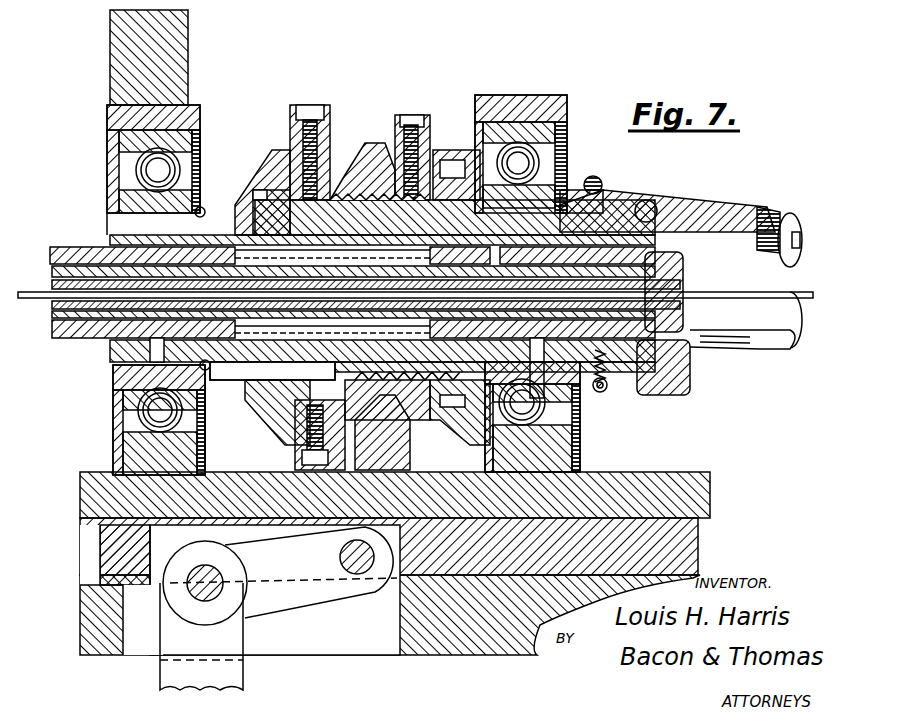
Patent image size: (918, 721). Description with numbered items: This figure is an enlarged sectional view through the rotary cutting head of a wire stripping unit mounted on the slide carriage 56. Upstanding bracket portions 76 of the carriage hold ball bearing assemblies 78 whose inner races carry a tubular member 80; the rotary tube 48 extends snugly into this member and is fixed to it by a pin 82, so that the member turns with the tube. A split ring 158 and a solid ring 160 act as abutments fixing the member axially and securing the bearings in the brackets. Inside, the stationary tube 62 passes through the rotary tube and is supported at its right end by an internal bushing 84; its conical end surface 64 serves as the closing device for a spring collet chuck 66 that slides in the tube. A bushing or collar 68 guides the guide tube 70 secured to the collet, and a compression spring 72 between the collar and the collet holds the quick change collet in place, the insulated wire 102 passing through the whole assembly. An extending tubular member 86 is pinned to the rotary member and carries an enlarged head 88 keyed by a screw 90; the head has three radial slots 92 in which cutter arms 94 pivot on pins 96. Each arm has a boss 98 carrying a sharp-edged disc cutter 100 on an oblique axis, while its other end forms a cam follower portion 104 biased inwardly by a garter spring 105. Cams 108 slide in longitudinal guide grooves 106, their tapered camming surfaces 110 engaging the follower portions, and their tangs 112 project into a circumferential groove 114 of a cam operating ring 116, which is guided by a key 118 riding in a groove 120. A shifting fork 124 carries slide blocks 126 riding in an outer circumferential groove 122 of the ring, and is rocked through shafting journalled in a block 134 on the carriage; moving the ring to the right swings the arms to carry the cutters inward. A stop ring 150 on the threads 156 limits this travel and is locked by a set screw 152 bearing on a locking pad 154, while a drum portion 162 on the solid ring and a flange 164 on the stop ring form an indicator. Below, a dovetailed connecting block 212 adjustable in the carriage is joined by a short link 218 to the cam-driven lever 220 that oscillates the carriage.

The block 134 is at (115, 50).
The upstanding bracket portions 76 is at (192, 112).
The ball bearing assemblies 78 is at (119, 148).
The split ring 158 is at (195, 214).
The longitudinal guide grooves 106 is at (228, 218).
The tangs 112 is at (273, 203).
The shifting fork 124 is at (308, 106).
The slide blocks 126 is at (362, 148).
The stop ring 150 is at (418, 115).
The set screw 152 is at (406, 124).
The solid ring 160 is at (458, 150).
The locking pad 154 is at (455, 214).
The stationary tube 62 is at (50, 256).
The cams 108 is at (332, 252).
The internal bushing 84 is at (353, 260).
The bushing or collar 68 is at (460, 253).
The compression spring 72 is at (577, 252).
The guide tube 70 is at (48, 300).
The insulated wire 102 is at (742, 292).
The pin 82 is at (110, 348).
The rotary tube 48 is at (78, 246).
The conical end surface 64 is at (683, 262).
The spring collet chuck 66 is at (683, 288).
The extending tubular member 86 is at (663, 367).
The enlarged head 88 is at (670, 365).
The screw 90 is at (690, 338).
The cutter arms 94 is at (722, 205).
The boss 98 is at (766, 205).
The disc cutter 100 is at (790, 212).
The pins 96 is at (647, 199).
The radial slots 92 is at (665, 192).
The tapered camming surface 110 is at (598, 184).
The cam follower portion 104 is at (575, 190).
The tubular member 80 is at (572, 380).
The garter spring 105 is at (607, 386).
The threads 156 is at (403, 368).
The groove 120 is at (222, 372).
The key 118 is at (245, 380).
The circumferential groove 114 is at (268, 405).
The cam operating ring 116 is at (285, 440).
The outer circumferential groove 122 is at (365, 418).
The drum portion 162 is at (465, 420).
The flange 164 is at (445, 436).
The slide carriage 56 is at (665, 472).
The dovetailed connecting block 212 is at (700, 542).
The short link 218 is at (318, 588).
The lever 220 is at (243, 672).